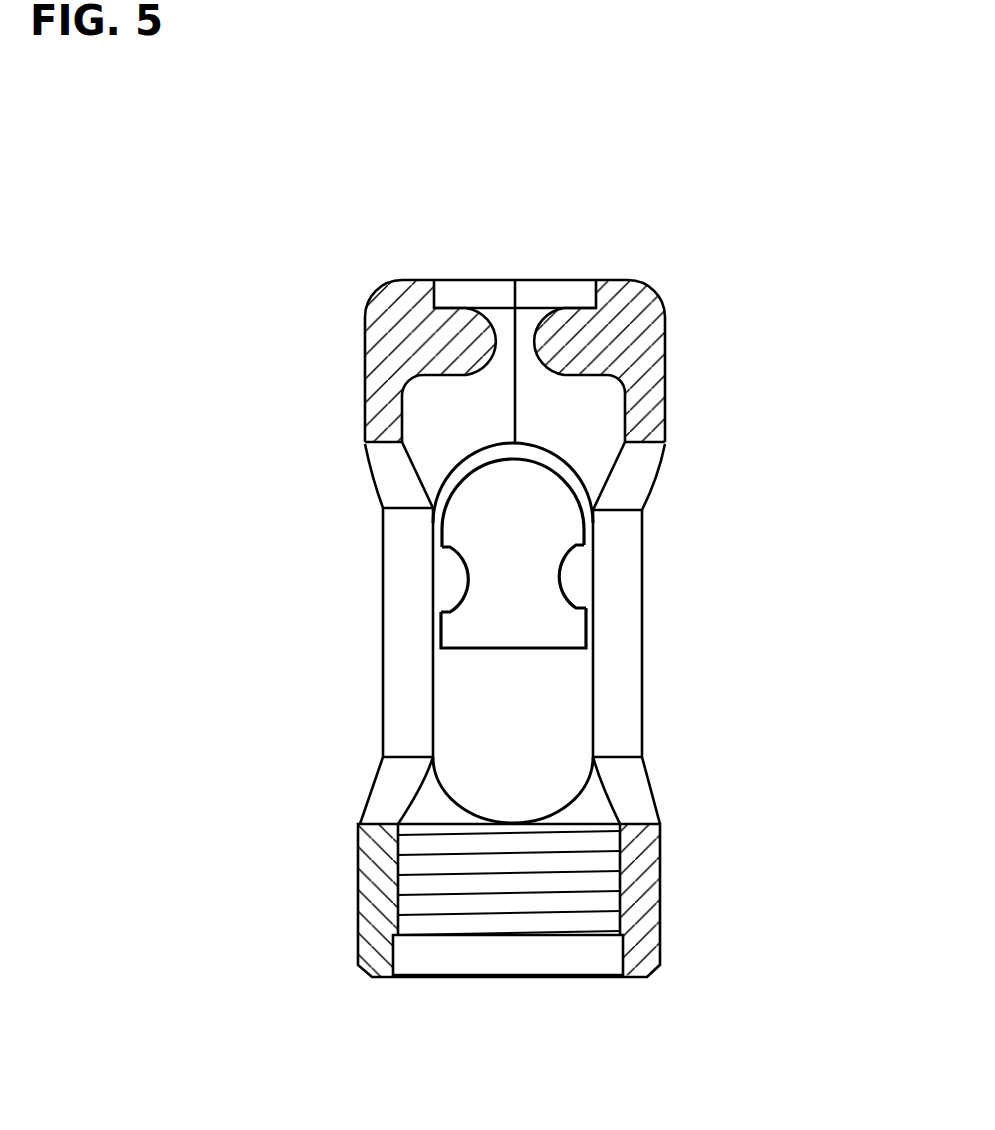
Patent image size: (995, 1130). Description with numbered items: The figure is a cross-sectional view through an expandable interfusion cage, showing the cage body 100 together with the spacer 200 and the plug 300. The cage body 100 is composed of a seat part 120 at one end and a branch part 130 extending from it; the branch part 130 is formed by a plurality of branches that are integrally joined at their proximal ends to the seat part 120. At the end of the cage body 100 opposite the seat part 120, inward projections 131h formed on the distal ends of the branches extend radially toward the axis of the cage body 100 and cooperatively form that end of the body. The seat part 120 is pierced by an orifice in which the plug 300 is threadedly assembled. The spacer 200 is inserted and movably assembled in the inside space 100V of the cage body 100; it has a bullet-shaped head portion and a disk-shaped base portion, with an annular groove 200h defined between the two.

The cage body 100 is at (330, 642).
The branch part 130 is at (335, 310).
The inward projections 131h is at (566, 326).
The seat part 120 is at (308, 797).
The plug 300 is at (485, 893).
The inside space 100V is at (550, 735).
The spacer 200 is at (540, 502).
The annular groove 200h is at (568, 580).